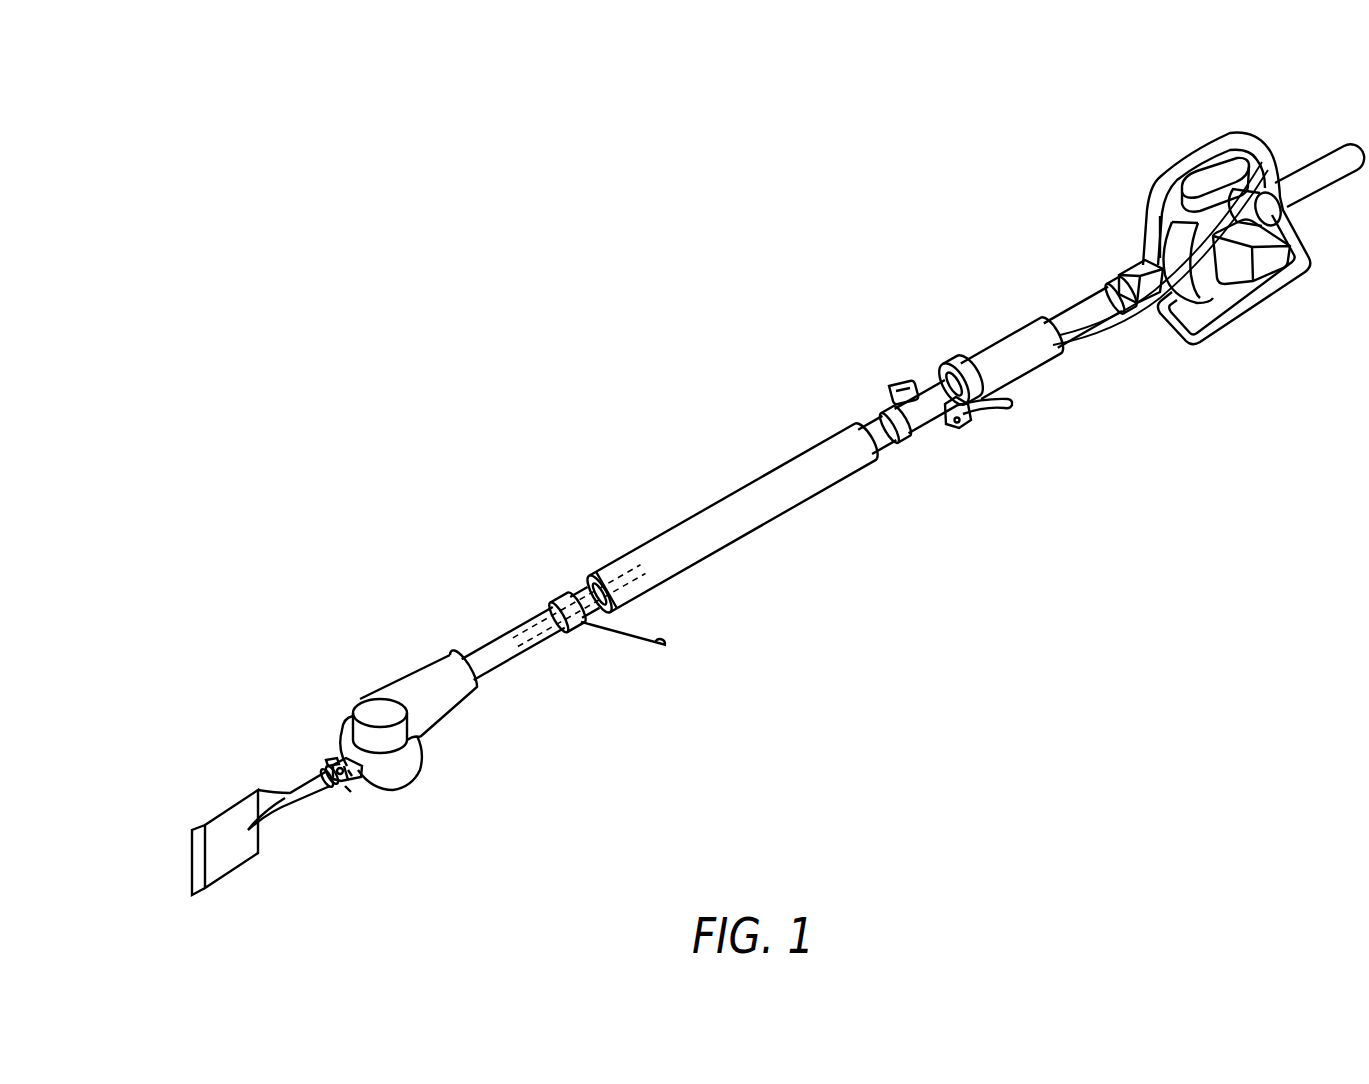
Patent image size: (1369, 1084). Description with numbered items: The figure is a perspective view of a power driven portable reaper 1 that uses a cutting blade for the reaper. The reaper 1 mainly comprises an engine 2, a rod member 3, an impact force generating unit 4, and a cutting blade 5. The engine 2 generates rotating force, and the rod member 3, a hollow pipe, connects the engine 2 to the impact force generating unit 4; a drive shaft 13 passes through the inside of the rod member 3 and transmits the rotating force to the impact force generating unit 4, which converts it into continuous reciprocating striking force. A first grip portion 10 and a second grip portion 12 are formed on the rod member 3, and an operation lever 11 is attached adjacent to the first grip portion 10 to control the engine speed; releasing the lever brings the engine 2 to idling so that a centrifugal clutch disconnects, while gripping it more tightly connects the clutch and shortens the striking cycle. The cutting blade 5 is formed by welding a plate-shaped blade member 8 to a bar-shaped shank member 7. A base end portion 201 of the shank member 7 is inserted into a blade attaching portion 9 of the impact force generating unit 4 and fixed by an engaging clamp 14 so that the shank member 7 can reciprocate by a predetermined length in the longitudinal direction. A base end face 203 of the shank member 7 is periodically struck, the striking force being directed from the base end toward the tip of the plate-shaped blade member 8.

The power driven portable reaper 1 is at (606, 372).
The engine 2 is at (1287, 124).
The rod member 3 is at (752, 454).
The impact force generating unit 4 is at (336, 679).
The cutting blade 5 is at (198, 779).
The shank member 7 is at (300, 787).
The plate-shaped blade member 8 is at (215, 810).
The blade attaching portion 9 is at (348, 790).
The first grip portion 10 is at (1010, 342).
The operation lever 11 is at (990, 413).
The second grip portion 12 is at (697, 530).
The drive shaft 13 is at (627, 562).
The engaging clamp 14 is at (337, 767).
The base end portion 201 is at (350, 790).
The base end face 203 is at (352, 772).